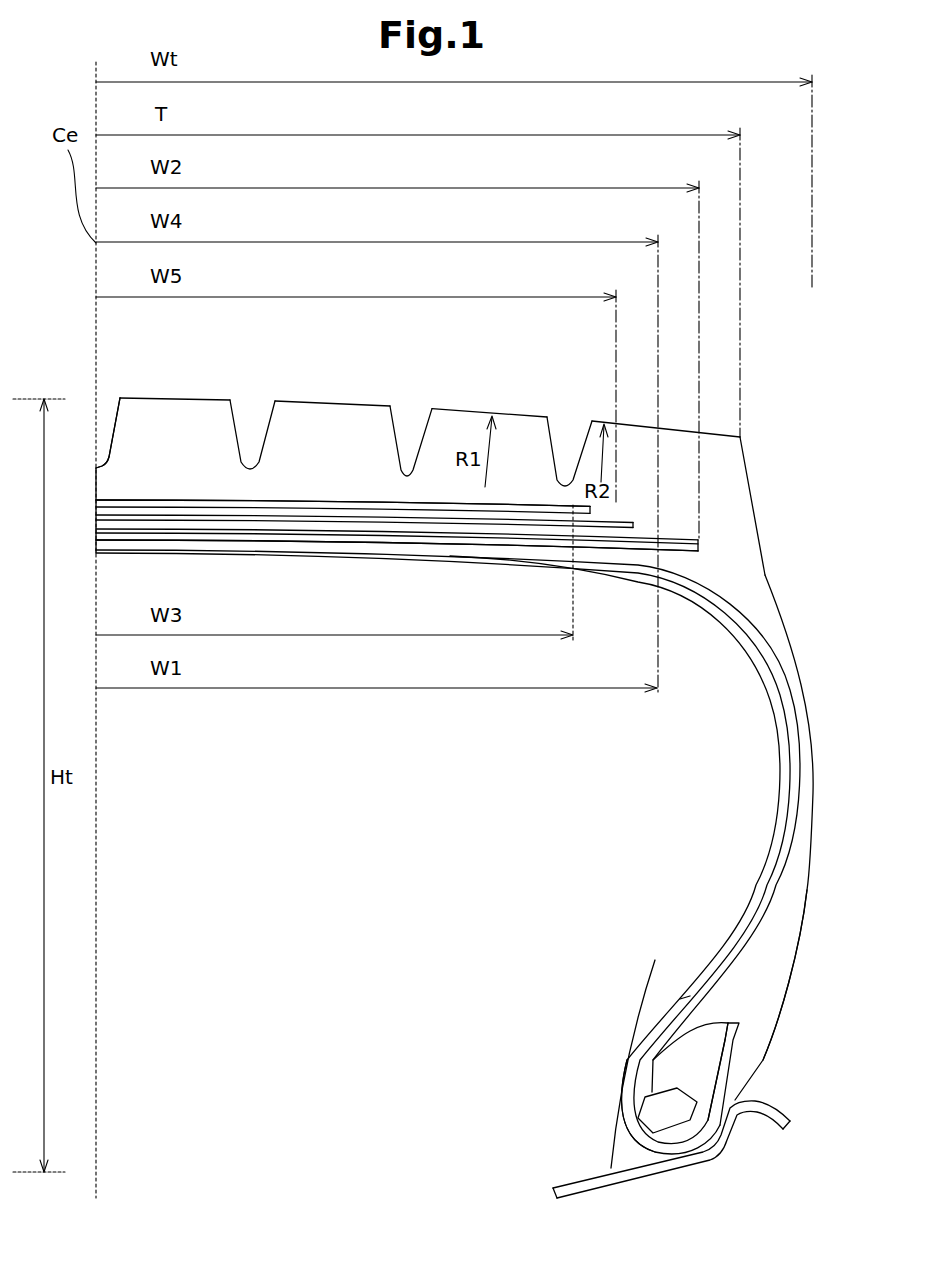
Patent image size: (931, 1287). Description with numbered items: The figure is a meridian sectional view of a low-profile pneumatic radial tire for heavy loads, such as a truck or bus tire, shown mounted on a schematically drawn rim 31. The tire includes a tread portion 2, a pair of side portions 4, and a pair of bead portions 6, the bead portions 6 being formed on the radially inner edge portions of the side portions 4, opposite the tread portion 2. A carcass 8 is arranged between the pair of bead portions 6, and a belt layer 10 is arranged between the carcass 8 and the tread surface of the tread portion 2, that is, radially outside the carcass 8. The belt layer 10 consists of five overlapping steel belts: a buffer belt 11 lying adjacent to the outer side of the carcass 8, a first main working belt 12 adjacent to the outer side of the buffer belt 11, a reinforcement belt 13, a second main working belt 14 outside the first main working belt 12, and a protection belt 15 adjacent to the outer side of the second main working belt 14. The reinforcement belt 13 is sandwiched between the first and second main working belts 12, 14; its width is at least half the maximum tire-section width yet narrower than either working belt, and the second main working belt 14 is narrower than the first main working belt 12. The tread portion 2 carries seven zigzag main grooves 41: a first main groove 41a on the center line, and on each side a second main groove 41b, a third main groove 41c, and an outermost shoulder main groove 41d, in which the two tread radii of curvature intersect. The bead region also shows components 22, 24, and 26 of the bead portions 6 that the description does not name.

The tread portion 2 is at (210, 420).
The main grooves 41 is at (120, 387).
The first main groove 41a is at (104, 455).
The second main groove 41b is at (263, 428).
The third main groove 41c is at (421, 445).
The shoulder main groove 41d is at (578, 458).
The side portion 4 is at (805, 758).
The bead portion 6 is at (772, 1000).
The carcass 8 is at (741, 618).
The belt layer 10 is at (814, 565).
The buffer belt 11 is at (690, 562).
The first main working belt 12 is at (703, 542).
The reinforcement belt 13 is at (645, 532).
The second main working belt 14 is at (647, 522).
The protection belt 15 is at (608, 502).
The bead core 22 is at (655, 1097).
The bead apex 24 is at (676, 1056).
The chafer 26 is at (626, 1148).
The rim 31 is at (686, 1163).